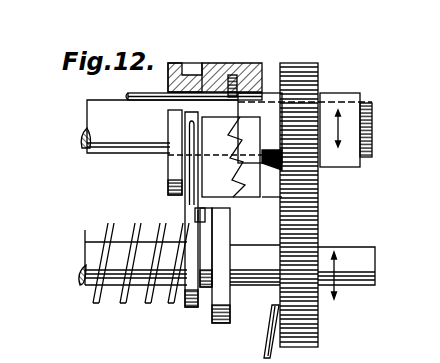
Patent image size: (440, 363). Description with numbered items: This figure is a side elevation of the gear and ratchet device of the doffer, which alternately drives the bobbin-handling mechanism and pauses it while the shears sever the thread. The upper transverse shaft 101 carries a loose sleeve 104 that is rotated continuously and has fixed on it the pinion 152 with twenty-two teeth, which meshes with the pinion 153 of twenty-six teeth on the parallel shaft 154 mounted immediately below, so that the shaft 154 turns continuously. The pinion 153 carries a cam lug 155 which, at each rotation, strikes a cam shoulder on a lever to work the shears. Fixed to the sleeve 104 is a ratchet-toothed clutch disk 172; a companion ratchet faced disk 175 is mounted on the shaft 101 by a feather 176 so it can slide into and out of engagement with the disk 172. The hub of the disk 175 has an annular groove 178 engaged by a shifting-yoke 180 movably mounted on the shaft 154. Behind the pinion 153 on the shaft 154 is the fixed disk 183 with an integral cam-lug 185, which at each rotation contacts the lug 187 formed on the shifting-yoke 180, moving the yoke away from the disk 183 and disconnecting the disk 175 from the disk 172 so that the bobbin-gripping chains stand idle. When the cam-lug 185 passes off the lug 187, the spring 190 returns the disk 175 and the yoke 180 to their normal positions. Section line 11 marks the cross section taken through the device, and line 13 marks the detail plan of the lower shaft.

The section line 11— 11 is at (208, 62).
The section line 13— 13 is at (180, 200).
The transverse shaft 101 is at (159, 126).
The loose sleeve 104 is at (272, 94).
The pinion 152 is at (305, 70).
The pinion 153 is at (318, 222).
The parallel shaft 154 is at (90, 258).
The cam lug 155 is at (268, 346).
The ratchet-toothed clutch disk 172 is at (252, 63).
The ratchet faced disk 175 is at (170, 84).
The feather 176 is at (128, 97).
The annular groove 178 is at (192, 68).
The shifting-yoke 180 is at (185, 161).
The fixed disk 183 is at (226, 241).
The cam-lug 185 is at (214, 218).
The lug 187 is at (196, 216).
The spring 190 is at (138, 241).